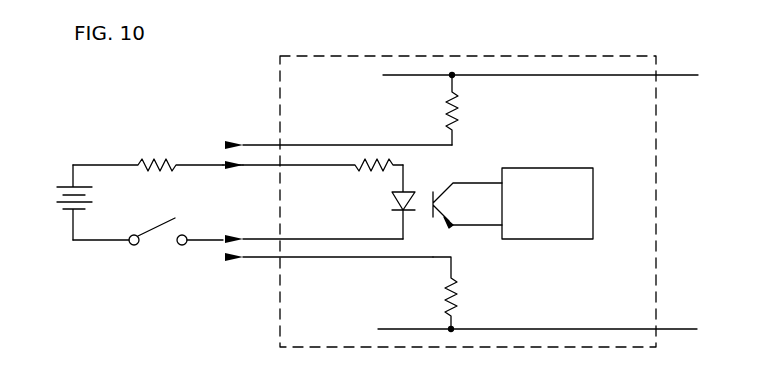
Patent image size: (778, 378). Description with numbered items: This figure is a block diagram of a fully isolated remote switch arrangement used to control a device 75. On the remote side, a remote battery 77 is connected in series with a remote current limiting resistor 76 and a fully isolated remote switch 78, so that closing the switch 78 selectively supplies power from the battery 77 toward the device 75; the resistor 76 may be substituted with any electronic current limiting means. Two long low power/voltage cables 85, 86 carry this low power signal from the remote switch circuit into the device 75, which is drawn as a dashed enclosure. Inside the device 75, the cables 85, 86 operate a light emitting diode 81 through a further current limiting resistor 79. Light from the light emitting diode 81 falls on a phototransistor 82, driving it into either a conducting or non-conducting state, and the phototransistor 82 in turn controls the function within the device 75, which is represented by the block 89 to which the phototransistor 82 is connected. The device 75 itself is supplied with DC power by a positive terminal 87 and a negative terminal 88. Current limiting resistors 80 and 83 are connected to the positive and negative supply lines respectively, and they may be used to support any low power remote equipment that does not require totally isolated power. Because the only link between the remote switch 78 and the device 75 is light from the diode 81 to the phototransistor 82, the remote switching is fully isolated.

The device 75 is at (455, 56).
The remote current limiting resistor 76 is at (159, 157).
The remote battery 77 is at (62, 185).
The fully isolated remote switch 78 is at (165, 220).
The further current limiting resistor 79 is at (363, 172).
The current limiting resistor 80 is at (460, 100).
The light emitting diode 81 is at (410, 190).
The phototransistor 82 is at (431, 210).
The current limiting resistor 83 is at (445, 282).
The long low power/voltage cable 85 is at (210, 167).
The long low power/voltage cable 86 is at (212, 238).
The positive terminal 87 is at (730, 62).
The negative terminal 88 is at (733, 342).
The output circuit block 89 is at (552, 168).